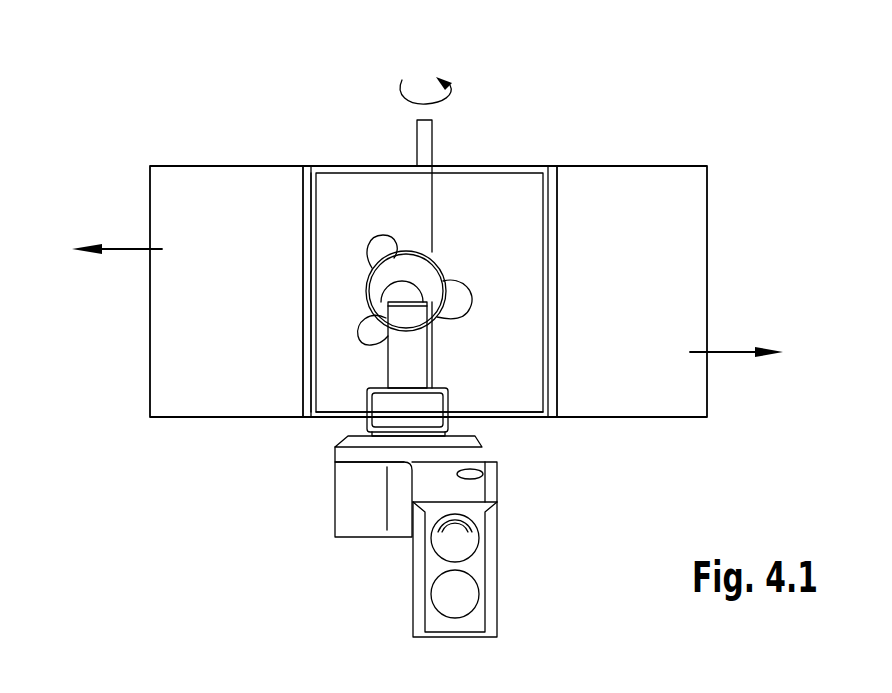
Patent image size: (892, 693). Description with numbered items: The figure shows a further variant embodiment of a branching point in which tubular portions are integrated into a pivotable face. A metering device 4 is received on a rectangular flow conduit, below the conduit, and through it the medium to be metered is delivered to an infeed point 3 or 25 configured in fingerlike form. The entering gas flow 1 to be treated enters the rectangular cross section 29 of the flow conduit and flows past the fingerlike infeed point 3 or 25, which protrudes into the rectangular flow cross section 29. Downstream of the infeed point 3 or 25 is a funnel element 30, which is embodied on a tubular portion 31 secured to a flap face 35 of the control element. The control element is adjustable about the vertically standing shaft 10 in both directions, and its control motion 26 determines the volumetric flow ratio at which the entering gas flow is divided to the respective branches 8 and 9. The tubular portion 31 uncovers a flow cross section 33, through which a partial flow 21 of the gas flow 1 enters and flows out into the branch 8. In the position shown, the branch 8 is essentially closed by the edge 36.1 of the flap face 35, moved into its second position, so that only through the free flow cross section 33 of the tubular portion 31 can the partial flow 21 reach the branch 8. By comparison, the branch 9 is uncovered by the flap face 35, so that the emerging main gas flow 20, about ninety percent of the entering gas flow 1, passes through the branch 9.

The entering gas flow 1 is at (510, 397).
The infeed point 3 is at (456, 345).
The infeed point 25 is at (433, 321).
The metering device 4 is at (497, 490).
The branch 8 is at (150, 330).
The branch 9 is at (707, 230).
The shaft 10 is at (450, 143).
The outlet flow direction 20 is at (722, 352).
The partial flow 21 is at (128, 249).
The control motion 26 is at (448, 92).
The rectangular cross section 29 is at (503, 165).
The funnel element 30 is at (442, 262).
The tubular portion 31 is at (445, 284).
The flow cross section 33 is at (392, 292).
The flap face 35 is at (371, 189).
The edge 36.1 is at (311, 328).